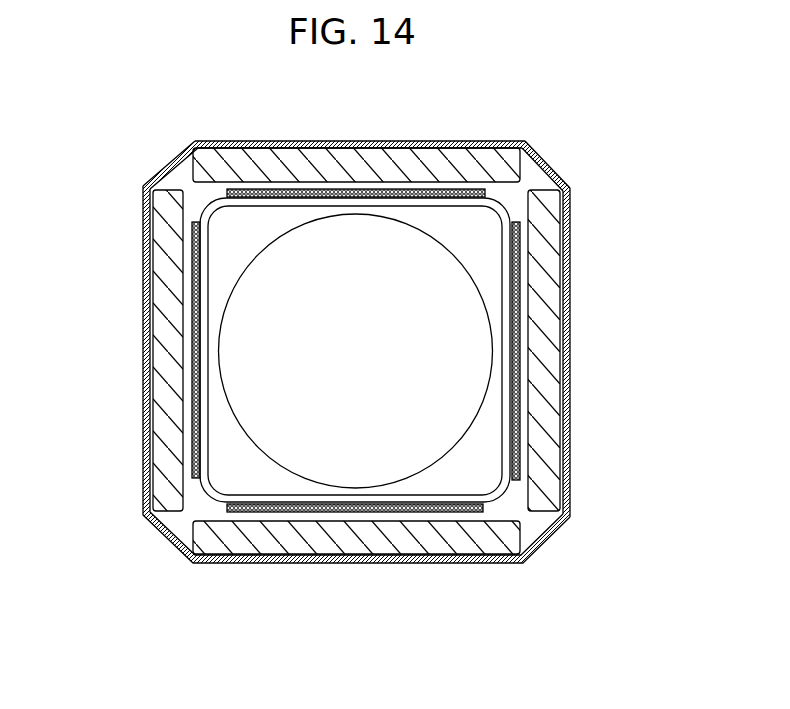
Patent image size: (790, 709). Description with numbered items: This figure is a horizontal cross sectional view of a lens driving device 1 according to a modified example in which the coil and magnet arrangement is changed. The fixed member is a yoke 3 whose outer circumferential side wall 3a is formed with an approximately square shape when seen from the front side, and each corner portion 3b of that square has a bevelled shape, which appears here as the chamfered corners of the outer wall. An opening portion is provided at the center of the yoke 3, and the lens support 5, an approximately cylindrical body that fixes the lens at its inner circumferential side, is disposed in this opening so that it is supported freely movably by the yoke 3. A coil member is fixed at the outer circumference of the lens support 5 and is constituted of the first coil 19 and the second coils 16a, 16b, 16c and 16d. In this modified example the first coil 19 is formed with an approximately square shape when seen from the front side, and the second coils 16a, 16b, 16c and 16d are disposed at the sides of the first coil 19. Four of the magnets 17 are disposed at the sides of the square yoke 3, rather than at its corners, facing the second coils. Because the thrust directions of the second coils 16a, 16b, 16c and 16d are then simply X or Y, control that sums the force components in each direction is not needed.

The lens driving device 1 is at (530, 106).
The yoke 3 is at (370, 133).
The outer circumferential side wall 3a is at (570, 327).
The corner portion 3b is at (545, 165).
The lens support 5 is at (509, 500).
The second coil 16a is at (291, 509).
The second coil 16b is at (518, 272).
The second coil 16c is at (295, 190).
The second coil 16d is at (193, 283).
The magnet 17 is at (547, 378).
The first coil 19 is at (150, 183).